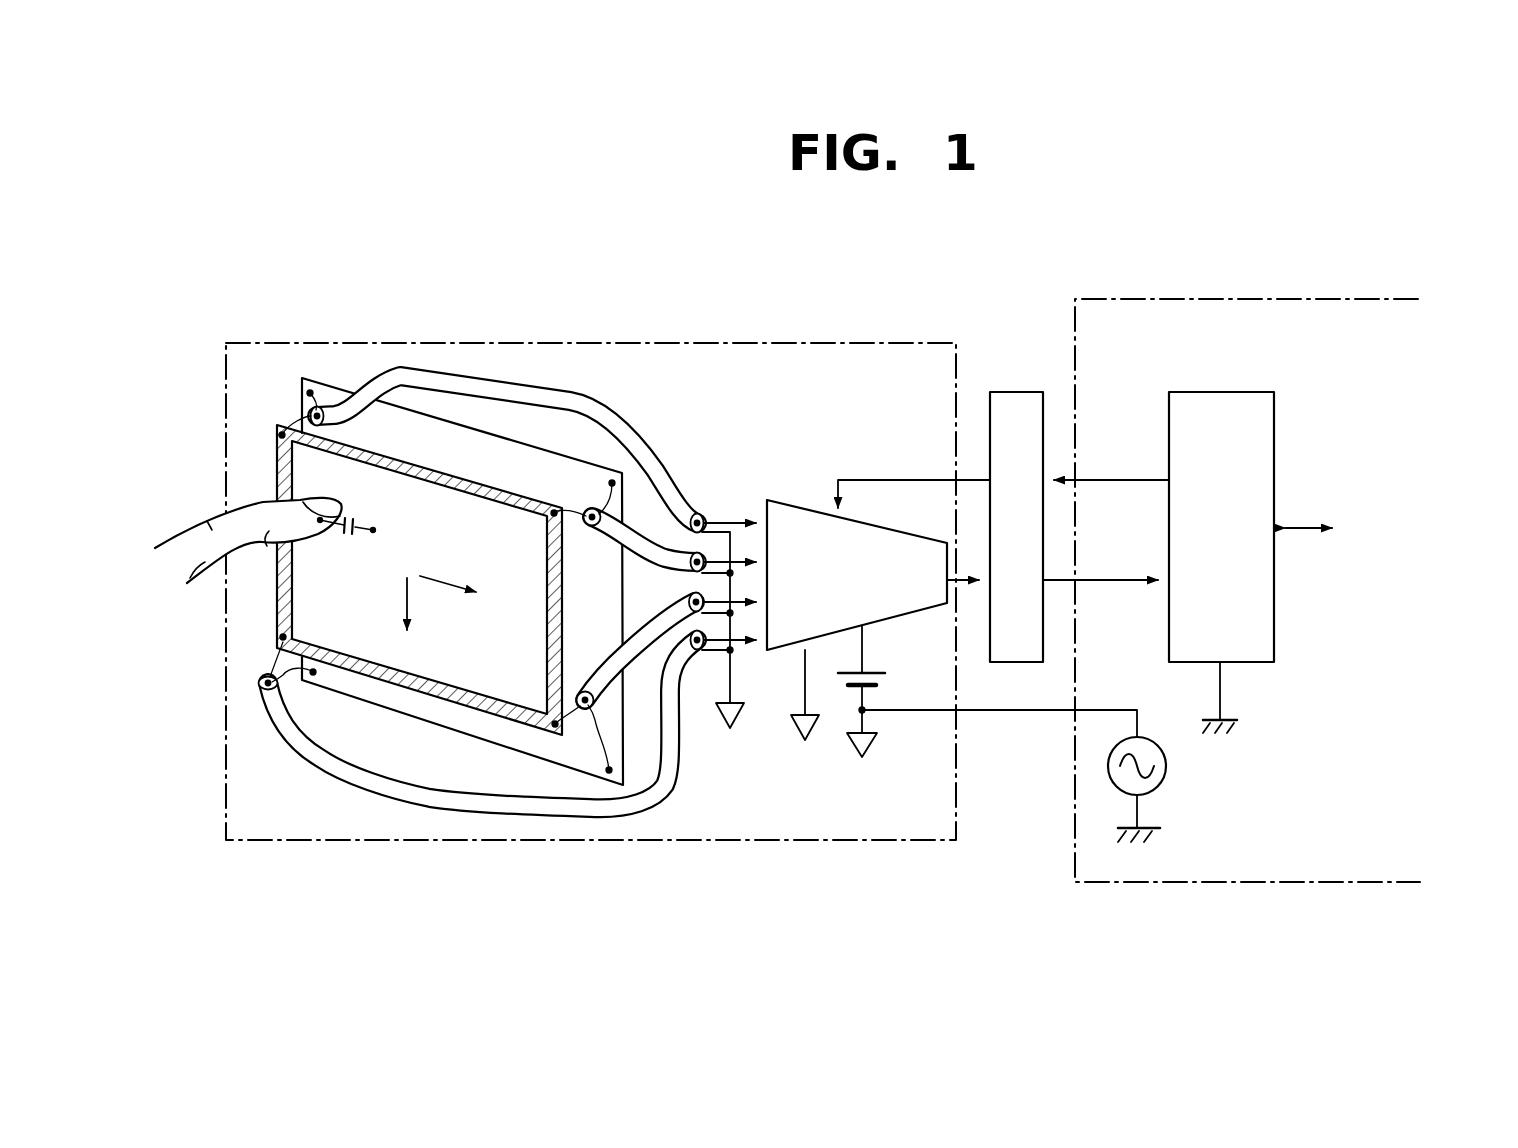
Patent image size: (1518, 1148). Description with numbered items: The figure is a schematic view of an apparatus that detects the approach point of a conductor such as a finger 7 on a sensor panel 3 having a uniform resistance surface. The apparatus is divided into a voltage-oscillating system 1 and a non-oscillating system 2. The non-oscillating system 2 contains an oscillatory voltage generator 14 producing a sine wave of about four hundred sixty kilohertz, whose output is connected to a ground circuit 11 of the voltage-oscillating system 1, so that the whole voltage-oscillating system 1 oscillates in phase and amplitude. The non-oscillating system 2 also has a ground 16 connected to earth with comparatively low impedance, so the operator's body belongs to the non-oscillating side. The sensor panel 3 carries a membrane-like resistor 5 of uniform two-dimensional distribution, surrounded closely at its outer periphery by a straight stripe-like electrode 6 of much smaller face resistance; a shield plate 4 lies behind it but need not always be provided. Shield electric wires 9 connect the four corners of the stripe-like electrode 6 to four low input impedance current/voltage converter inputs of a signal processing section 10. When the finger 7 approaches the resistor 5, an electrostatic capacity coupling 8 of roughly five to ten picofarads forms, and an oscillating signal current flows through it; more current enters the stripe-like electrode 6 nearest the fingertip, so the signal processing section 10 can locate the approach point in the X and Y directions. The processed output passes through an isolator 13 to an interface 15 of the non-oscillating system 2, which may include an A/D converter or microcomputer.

The voltage-oscillating system 1 is at (840, 341).
The non-oscillating system 2 is at (1155, 296).
The sensor panel 3 is at (418, 531).
The shield plate 4 is at (503, 457).
The resistor 5 is at (443, 528).
The stripe-like electrode 6 is at (558, 635).
The finger 7 is at (210, 526).
The electrostatic capacity coupling 8 is at (350, 538).
The shield electric wires 9 is at (625, 437).
The signal processing section 10 is at (800, 506).
The ground circuit 11 is at (868, 748).
The isolator 13 is at (1015, 380).
The oscillatory voltage generator 14 is at (1166, 766).
The interface 15 is at (1238, 393).
The ground 16 is at (1240, 718).